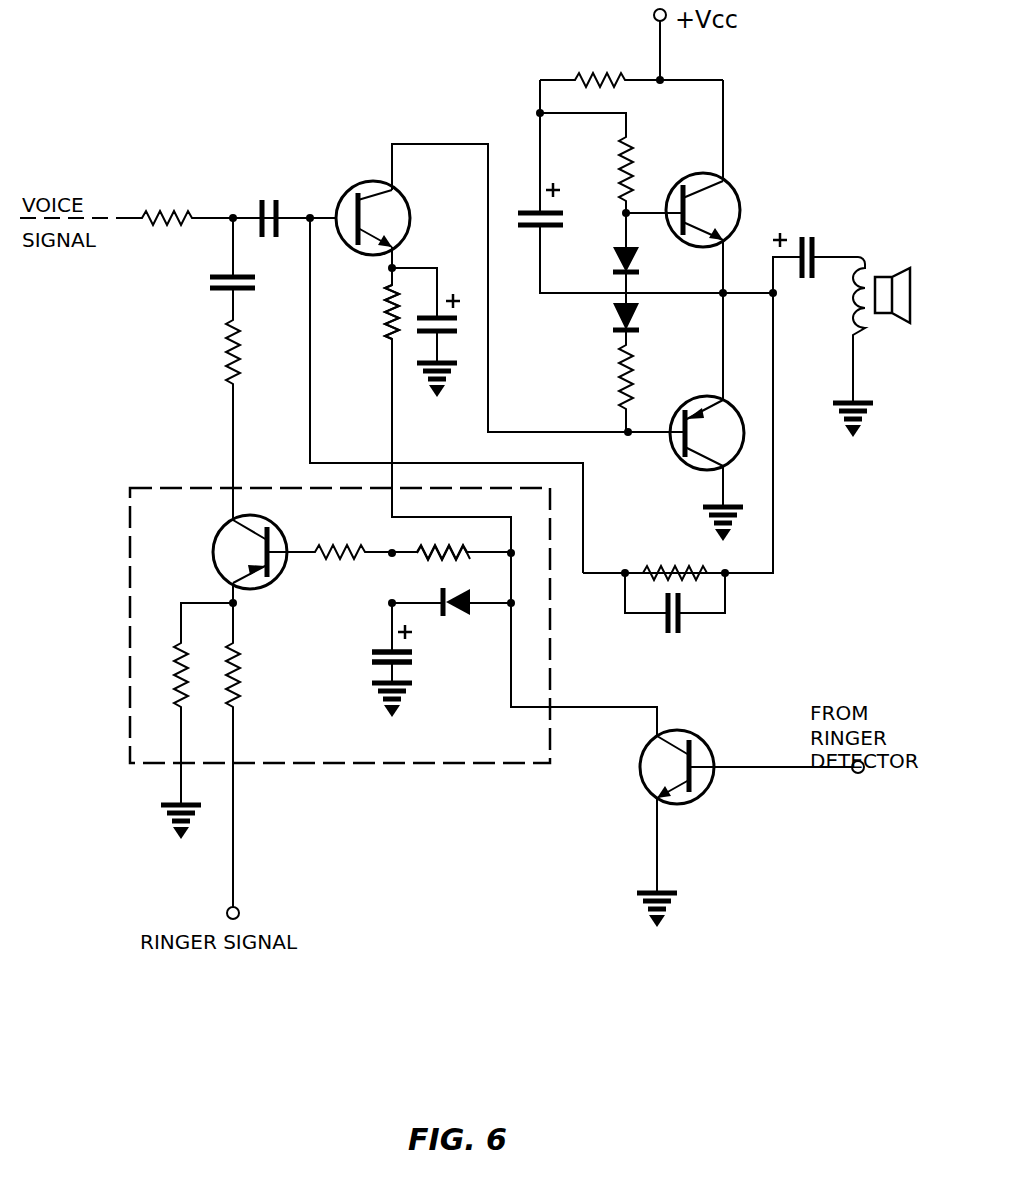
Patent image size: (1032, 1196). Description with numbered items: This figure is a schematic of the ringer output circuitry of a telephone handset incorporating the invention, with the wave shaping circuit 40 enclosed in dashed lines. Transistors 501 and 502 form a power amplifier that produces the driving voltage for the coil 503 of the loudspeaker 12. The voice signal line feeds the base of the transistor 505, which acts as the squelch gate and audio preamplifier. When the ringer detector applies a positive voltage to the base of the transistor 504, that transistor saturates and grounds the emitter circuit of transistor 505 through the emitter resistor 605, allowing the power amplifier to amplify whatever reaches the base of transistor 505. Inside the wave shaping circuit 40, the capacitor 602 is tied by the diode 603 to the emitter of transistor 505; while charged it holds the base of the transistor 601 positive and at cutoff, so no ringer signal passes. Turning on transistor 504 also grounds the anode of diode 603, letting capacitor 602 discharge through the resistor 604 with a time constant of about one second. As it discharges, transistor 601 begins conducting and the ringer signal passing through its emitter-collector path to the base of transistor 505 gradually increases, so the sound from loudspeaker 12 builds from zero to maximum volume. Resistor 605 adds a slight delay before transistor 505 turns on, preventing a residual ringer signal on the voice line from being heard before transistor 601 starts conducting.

The transistor 505 is at (345, 190).
The emitter resistor 605 is at (385, 305).
The transistor 501 is at (743, 208).
The coil 503 is at (850, 257).
The loudspeaker 12 is at (885, 315).
The transistor 502 is at (677, 458).
The transistor 601 is at (218, 537).
The resistor 604 is at (440, 546).
The capacitor 602 is at (373, 658).
The diode 603 is at (460, 607).
The wave shaping circuit 40 is at (413, 765).
The transistor 504 is at (702, 797).